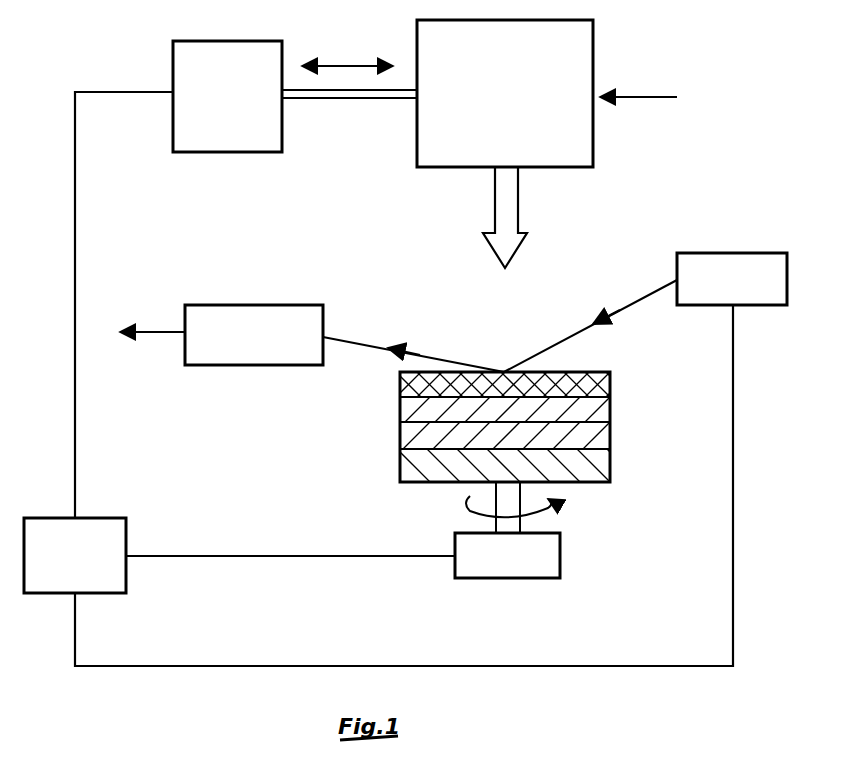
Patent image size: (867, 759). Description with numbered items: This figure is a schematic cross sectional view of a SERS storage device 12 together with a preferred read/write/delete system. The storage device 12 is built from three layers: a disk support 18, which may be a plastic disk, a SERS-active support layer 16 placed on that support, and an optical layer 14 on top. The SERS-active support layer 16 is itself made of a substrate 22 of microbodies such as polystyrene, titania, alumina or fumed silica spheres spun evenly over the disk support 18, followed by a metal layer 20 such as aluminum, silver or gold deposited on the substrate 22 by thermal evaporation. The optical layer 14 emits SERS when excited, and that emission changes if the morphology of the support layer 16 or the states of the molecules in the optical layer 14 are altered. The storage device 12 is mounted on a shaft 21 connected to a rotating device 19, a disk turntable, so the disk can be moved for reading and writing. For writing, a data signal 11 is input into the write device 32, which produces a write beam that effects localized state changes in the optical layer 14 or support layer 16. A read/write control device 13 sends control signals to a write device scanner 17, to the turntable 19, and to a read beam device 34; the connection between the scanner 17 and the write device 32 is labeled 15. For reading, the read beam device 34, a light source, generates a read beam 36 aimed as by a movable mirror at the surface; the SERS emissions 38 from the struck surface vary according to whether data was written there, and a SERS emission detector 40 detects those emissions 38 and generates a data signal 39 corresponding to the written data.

The data signal 11 is at (632, 96).
The SERS storage device 12 is at (396, 386).
The read/write control device 13 is at (90, 557).
The optical layer 14 is at (614, 379).
The bidirectional data bus 15 is at (349, 104).
The SERS-active support layer 16 is at (622, 401).
The write device scanner 17 is at (246, 93).
The disk support 18 is at (610, 465).
The rotating device 19 is at (498, 558).
The metal layer 20 is at (400, 408).
The shaft 21 is at (552, 504).
The substrate 22 is at (400, 432).
The write device 32 is at (516, 92).
The read beam device 34 is at (722, 253).
The read beam 36 is at (633, 301).
The SERS emissions 38 is at (368, 340).
The data signal 39 is at (155, 332).
The SERS emission detector 40 is at (243, 305).